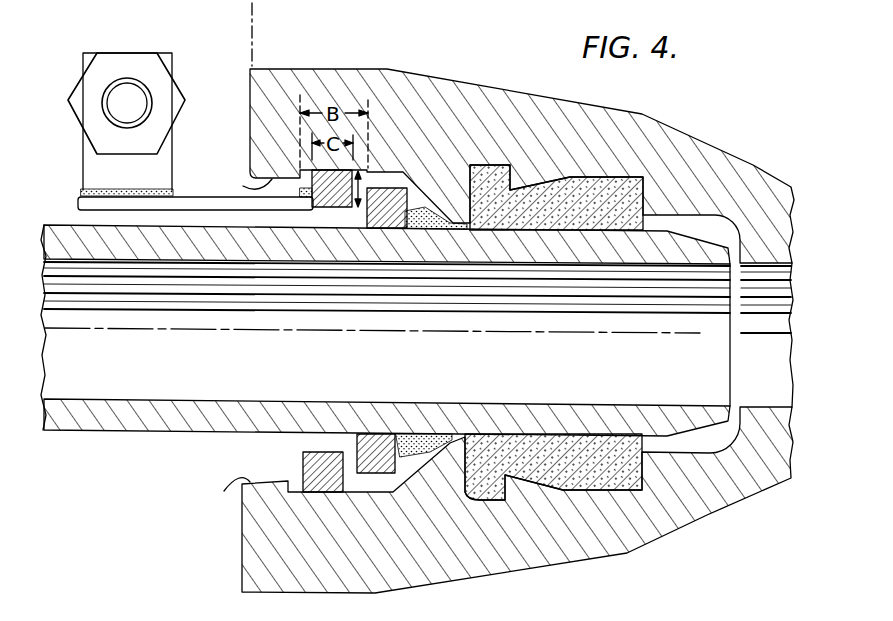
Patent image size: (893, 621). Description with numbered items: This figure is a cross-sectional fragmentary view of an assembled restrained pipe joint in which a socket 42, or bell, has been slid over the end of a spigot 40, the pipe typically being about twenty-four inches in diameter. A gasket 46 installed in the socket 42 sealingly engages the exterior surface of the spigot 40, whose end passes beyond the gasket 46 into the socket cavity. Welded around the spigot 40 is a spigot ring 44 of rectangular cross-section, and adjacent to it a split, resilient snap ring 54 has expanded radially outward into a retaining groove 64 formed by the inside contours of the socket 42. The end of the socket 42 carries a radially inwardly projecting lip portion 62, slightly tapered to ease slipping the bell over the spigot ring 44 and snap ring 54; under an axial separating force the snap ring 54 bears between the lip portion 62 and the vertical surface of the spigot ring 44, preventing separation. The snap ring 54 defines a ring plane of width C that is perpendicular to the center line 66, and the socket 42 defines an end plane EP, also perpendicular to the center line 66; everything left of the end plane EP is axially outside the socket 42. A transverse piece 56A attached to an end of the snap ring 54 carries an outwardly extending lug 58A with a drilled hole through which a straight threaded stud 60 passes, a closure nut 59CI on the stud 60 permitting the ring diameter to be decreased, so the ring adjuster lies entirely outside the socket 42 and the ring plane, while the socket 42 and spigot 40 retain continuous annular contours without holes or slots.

The spigot 40 is at (566, 404).
The socket 42 is at (730, 157).
The spigot ring 44 is at (382, 214).
The gasket 46 is at (594, 214).
The snap ring 54 is at (320, 208).
The transverse piece 56A is at (203, 196).
The lug 58A is at (105, 170).
The closure nut 59CI is at (175, 92).
The threaded stud 60 is at (118, 108).
The lip portion 62 is at (234, 342).
The retaining groove 64 is at (393, 172).
The center line 66 is at (220, 332).
The end plane EP is at (255, 49).